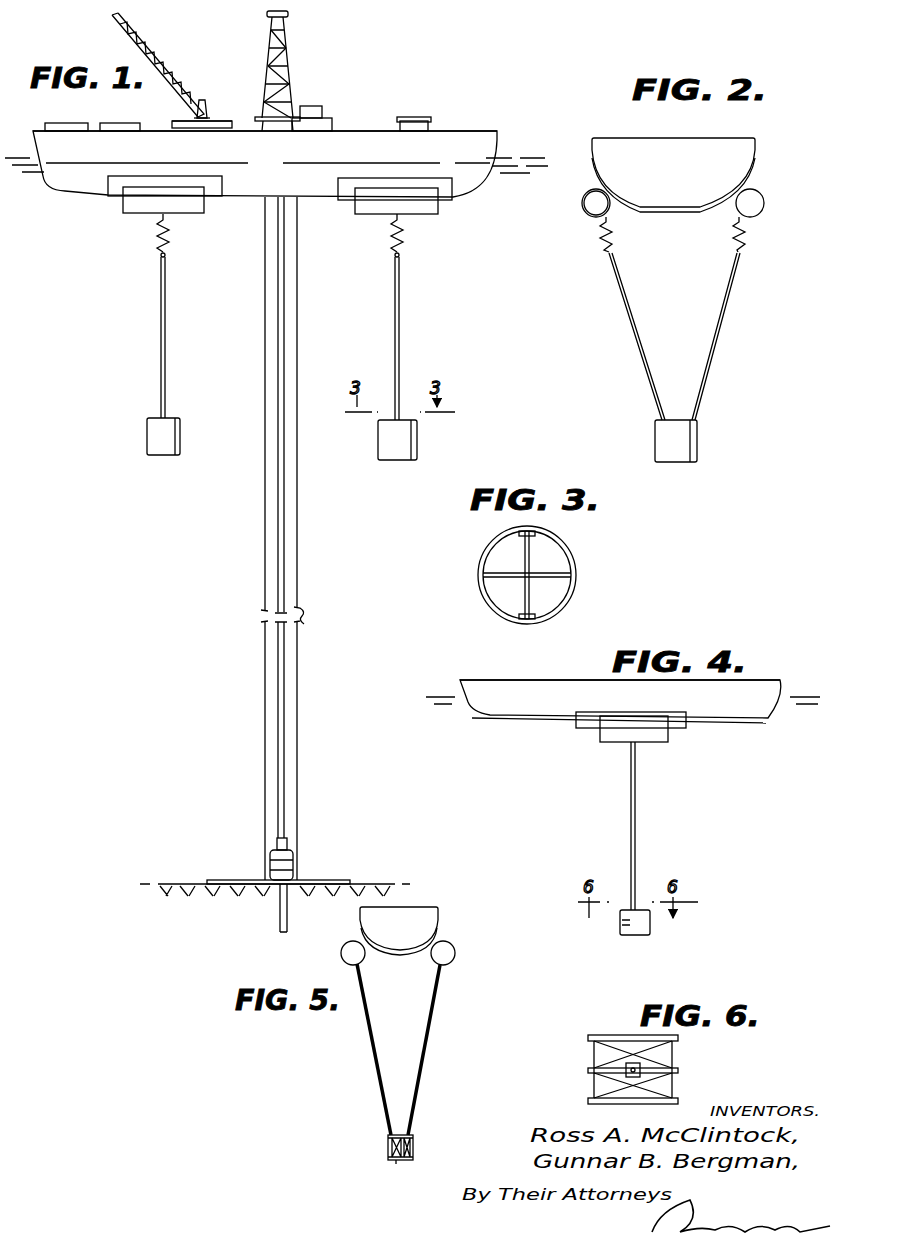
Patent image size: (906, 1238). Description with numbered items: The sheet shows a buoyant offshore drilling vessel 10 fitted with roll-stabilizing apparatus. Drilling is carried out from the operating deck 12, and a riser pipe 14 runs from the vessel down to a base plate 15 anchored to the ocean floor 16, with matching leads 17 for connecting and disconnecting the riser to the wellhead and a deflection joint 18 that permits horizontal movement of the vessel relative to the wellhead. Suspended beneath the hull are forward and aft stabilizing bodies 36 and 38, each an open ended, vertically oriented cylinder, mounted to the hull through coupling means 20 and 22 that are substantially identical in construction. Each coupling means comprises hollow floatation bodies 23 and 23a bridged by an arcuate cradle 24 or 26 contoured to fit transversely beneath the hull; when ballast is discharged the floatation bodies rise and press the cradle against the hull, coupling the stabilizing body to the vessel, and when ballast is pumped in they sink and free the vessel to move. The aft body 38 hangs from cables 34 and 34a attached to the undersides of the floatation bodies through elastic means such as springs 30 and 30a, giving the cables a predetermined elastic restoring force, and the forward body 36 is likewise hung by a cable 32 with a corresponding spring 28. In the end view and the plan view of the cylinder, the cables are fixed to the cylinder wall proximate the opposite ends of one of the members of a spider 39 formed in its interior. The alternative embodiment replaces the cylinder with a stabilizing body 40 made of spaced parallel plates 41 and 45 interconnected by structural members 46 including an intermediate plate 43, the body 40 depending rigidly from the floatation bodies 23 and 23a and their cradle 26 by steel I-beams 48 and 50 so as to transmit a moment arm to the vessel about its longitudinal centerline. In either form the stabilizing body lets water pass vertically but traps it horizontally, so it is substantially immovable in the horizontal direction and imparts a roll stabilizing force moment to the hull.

In FIG. 1, the vessel 10 is at (352, 128).
In FIG. 2, the vessel 10 is at (760, 150).
In FIG. 4, the vessel 10 is at (762, 692).
In FIG. 5, the vessel 10 is at (372, 922).
In FIG. 1, the operating deck 12 is at (240, 130).
In FIG. 4, the operating deck 12 is at (578, 682).
In FIG. 1, the riser pipe 14 is at (286, 565).
In FIG. 1, the base plate 15 is at (330, 886).
In FIG. 1, the ocean floor 16 is at (374, 884).
In FIG. 1, the matching leads 17 is at (267, 864).
In FIG. 1, the deflection joint 18 is at (278, 846).
In FIG. 1, the coupling means 20 is at (185, 214).
In FIG. 1, the coupling means 22 is at (438, 210).
In FIG. 2, the coupling means 22 is at (584, 221).
In FIG. 2, the floatation body 23 is at (582, 206).
In FIG. 4, the floatation body 23 is at (650, 752).
In FIG. 5, the floatation body 23 is at (342, 958).
In FIG. 2, the floatation body 23a is at (764, 206).
In FIG. 5, the floatation body 23a is at (456, 956).
In FIG. 1, the cradle 24 is at (226, 180).
In FIG. 1, the cradle 26 is at (440, 180).
In FIG. 2, the cradle 26 is at (690, 214).
In FIG. 4, the cradle 26 is at (678, 734).
In FIG. 5, the cradle 26 is at (398, 955).
In FIG. 1, the spring 28 is at (158, 252).
In FIG. 1, the springs 30 is at (402, 248).
In FIG. 2, the springs 30 is at (600, 250).
In FIG. 2, the spring 30a is at (746, 236).
In FIG. 1, the cable 32 is at (166, 365).
In FIG. 1, the cable 34 is at (400, 350).
In FIG. 2, the cable 34 is at (628, 336).
In FIG. 3, the cable 34 is at (512, 618).
In FIG. 2, the cable 34a is at (718, 334).
In FIG. 3, the cable 34a is at (532, 533).
In FIG. 1, the stabilizing body 36 is at (184, 440).
In FIG. 1, the stabilizing body 38 is at (420, 436).
In FIG. 2, the stabilizing body 38 is at (703, 446).
In FIG. 3, the stabilizing body 38 is at (580, 600).
In FIG. 3, the spider 39 is at (540, 562).
In FIG. 4, the stabilizing body 40 is at (646, 936).
In FIG. 5, the stabilizing body 40 is at (384, 1164).
In FIG. 5, the plate 41 is at (414, 1150).
In FIG. 6, the plate 41 is at (678, 1038).
In FIG. 5, the intermediate plate 43 is at (398, 1164).
In FIG. 6, the intermediate plate 43 is at (679, 1070).
In FIG. 4, the plate 45 is at (620, 932).
In FIG. 5, the plate 45 is at (386, 1148).
In FIG. 6, the plate 45 is at (676, 1103).
In FIG. 5, the structural members 46 is at (412, 1132).
In FIG. 6, the structural members 46 is at (600, 1078).
In FIG. 4, the steel I-beam 48 is at (637, 846).
In FIG. 5, the steel I-beam 48 is at (376, 1078).
In FIG. 5, the steel I-beam 50 is at (427, 1068).